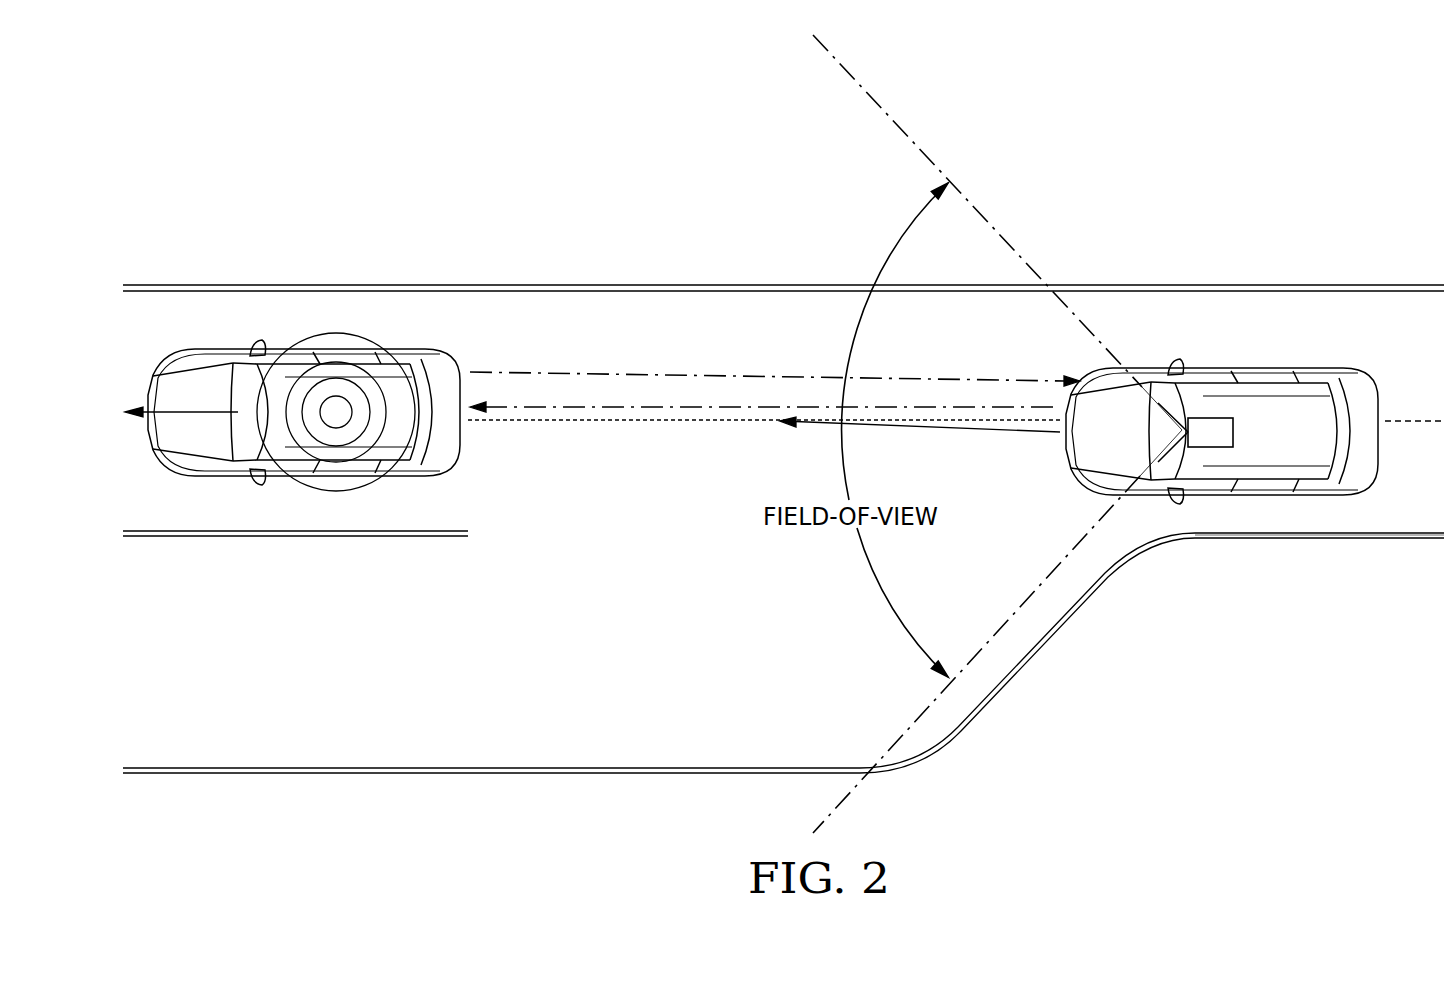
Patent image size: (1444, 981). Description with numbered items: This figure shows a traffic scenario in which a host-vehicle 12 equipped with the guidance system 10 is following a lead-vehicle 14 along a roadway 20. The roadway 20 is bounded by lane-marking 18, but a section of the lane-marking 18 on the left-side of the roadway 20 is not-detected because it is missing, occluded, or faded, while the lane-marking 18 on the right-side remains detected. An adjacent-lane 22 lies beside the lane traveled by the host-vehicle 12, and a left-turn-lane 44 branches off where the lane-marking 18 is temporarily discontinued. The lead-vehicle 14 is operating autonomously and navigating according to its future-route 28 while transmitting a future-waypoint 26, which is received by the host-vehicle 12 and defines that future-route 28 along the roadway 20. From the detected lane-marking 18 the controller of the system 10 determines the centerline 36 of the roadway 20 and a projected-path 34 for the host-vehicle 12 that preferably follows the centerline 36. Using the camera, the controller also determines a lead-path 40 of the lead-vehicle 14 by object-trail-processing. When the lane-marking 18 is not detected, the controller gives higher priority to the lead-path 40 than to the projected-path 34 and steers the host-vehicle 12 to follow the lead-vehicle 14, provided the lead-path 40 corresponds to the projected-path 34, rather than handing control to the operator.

The guidance system 10 is at (1207, 417).
The host-vehicle 12 is at (1230, 515).
The lead-vehicle 14 is at (447, 462).
The lane-marking 18 is at (1277, 288).
The roadway 20 is at (1335, 325).
The adjacent-lane 22 is at (358, 710).
The future-waypoint 26 is at (367, 340).
The future-route 28 is at (203, 405).
The projected-path 34 is at (990, 435).
The centerline 36 is at (1403, 421).
The lead-path 40 is at (695, 407).
The left-turn-lane 44 is at (625, 740).